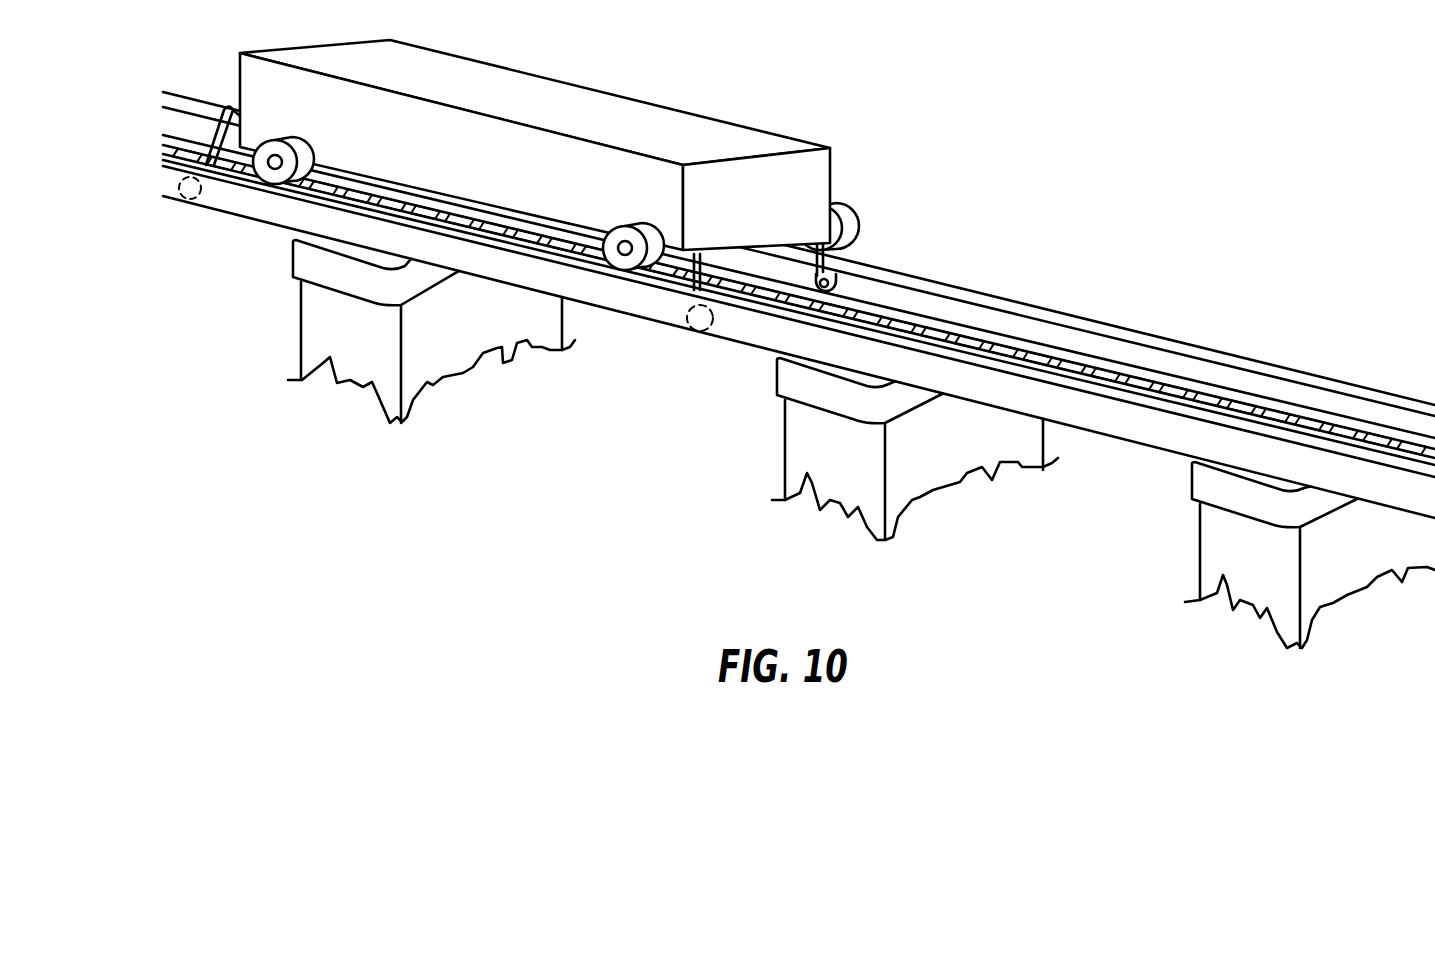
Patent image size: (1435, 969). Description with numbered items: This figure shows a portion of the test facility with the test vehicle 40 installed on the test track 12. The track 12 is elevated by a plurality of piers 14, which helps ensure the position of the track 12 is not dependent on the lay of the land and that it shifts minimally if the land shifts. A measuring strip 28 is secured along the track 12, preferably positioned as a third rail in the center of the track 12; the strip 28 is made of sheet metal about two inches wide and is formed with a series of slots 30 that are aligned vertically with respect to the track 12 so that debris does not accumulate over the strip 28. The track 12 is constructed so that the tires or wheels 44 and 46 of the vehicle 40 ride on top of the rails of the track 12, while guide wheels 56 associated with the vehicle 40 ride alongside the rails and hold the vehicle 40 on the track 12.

The test track 12 is at (799, 305).
The piers 14 is at (835, 444).
The measuring strip 28 is at (799, 301).
The slots 30 is at (799, 302).
The test vehicle 40 is at (535, 156).
The wheels 44 is at (860, 200).
The wheels 46 is at (219, 106).
The guide wheels 56 is at (546, 276).